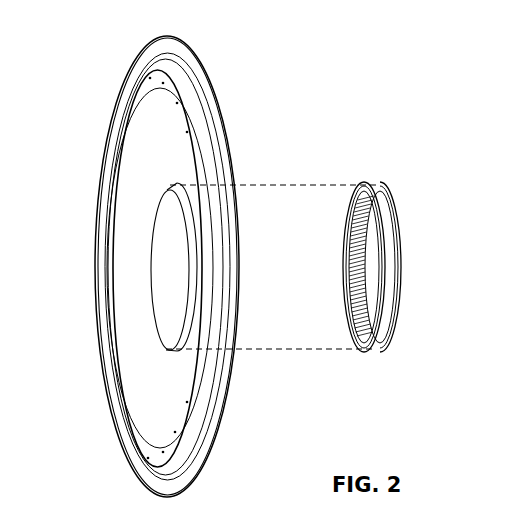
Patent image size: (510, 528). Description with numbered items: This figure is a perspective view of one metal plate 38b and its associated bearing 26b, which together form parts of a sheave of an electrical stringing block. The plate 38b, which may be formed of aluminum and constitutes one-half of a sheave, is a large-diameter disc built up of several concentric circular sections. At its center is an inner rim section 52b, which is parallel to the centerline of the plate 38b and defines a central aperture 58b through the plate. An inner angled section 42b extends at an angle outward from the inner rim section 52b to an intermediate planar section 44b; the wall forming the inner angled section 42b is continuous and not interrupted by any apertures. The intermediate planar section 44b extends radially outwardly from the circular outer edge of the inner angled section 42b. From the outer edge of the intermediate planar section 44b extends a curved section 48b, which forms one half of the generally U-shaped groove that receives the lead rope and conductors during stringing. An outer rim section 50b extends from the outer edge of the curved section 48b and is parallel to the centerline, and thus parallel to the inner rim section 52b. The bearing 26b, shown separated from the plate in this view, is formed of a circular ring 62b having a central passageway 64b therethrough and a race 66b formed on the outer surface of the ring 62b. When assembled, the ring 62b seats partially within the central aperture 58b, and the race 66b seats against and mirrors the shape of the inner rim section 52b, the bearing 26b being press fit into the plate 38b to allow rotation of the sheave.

The bearing 26b is at (385, 178).
The metal plate 38b is at (127, 92).
The inner angled section 42b is at (138, 422).
The intermediate planar section 44b is at (182, 413).
The curved section 48b is at (183, 455).
The outer rim section 50b is at (145, 72).
The inner rim section 52b is at (180, 305).
The central aperture 58b is at (163, 270).
The circular ring 62b is at (382, 352).
The central passageway 64b is at (392, 275).
The race 66b is at (358, 350).